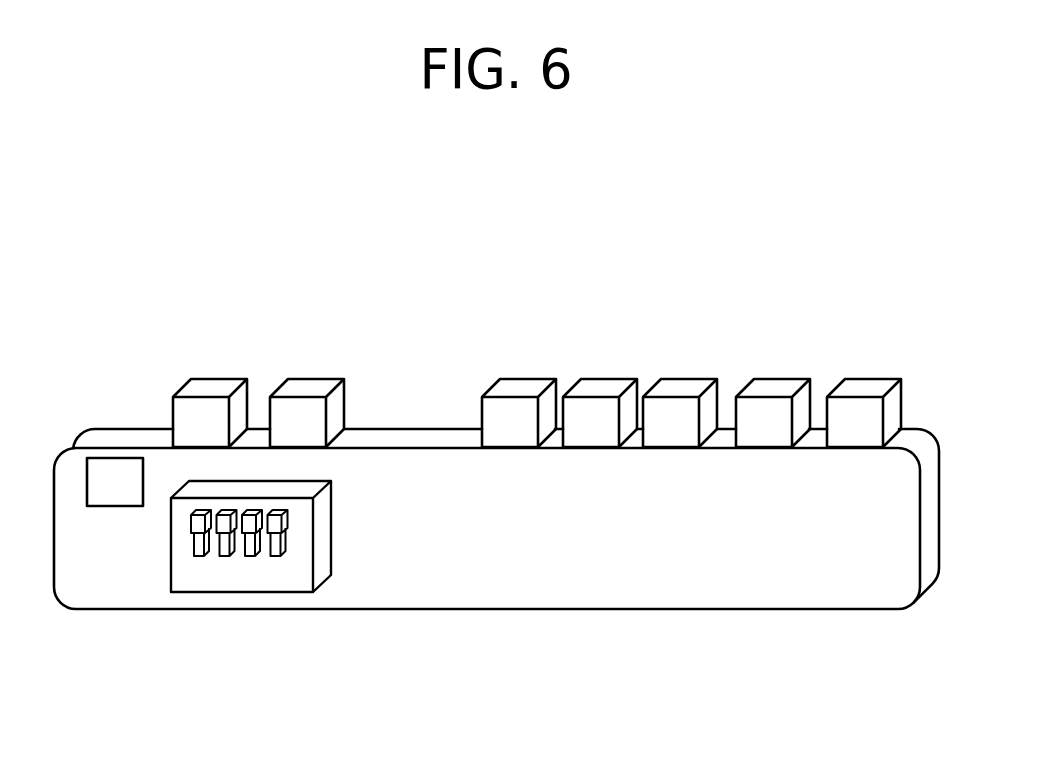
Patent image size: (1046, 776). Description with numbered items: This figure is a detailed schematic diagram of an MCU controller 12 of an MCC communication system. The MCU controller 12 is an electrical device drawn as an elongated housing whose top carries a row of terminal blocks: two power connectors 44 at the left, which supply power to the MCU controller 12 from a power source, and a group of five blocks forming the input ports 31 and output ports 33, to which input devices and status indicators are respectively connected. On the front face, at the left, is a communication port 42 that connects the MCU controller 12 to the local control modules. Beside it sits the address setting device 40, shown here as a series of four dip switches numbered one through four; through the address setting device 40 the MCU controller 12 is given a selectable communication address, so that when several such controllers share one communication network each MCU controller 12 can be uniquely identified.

The MCU controller 12 is at (383, 309).
The input ports 31 is at (693, 375).
The output ports 33 is at (488, 372).
The address setting device 40 is at (271, 597).
The communication port 42 is at (84, 478).
The power connectors 44 is at (157, 372).